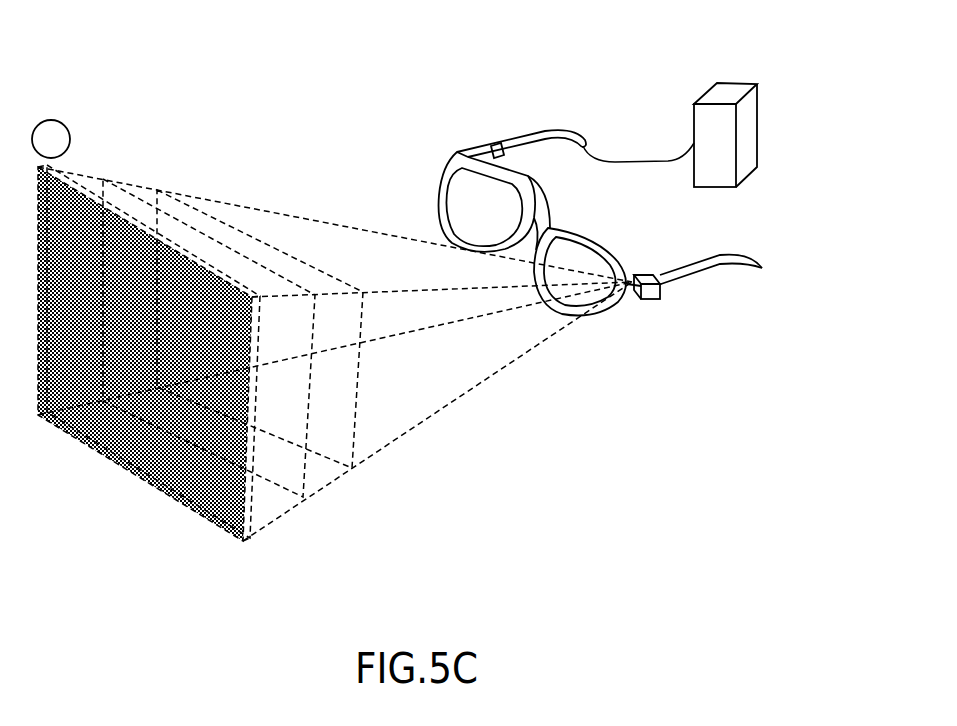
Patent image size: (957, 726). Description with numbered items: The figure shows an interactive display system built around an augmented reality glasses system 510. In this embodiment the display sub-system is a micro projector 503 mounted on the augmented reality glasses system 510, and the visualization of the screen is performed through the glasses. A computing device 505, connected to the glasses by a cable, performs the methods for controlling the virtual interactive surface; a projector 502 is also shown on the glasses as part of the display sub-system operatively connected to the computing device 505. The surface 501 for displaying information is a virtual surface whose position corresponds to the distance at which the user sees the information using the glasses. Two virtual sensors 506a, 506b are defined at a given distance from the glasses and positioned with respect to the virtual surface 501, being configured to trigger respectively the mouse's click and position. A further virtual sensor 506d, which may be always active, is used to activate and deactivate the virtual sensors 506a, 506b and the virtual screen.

The surface for displaying information 501 is at (206, 500).
The projector 502 is at (496, 143).
The micro projector 503 is at (651, 300).
The computing device 505 is at (735, 93).
The virtual sensor 506a is at (268, 513).
The virtual sensor 506b is at (330, 473).
The virtual sensor 506d is at (58, 128).
The augmented reality glasses system 510 is at (447, 192).